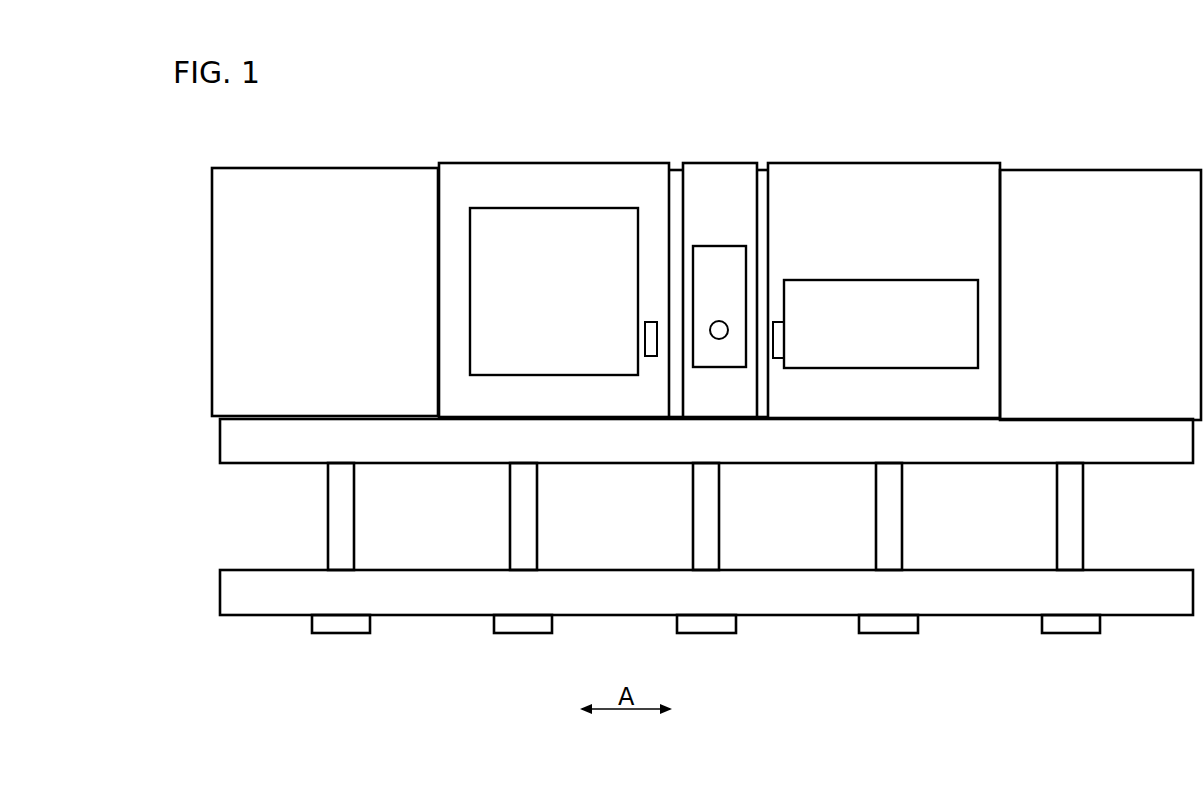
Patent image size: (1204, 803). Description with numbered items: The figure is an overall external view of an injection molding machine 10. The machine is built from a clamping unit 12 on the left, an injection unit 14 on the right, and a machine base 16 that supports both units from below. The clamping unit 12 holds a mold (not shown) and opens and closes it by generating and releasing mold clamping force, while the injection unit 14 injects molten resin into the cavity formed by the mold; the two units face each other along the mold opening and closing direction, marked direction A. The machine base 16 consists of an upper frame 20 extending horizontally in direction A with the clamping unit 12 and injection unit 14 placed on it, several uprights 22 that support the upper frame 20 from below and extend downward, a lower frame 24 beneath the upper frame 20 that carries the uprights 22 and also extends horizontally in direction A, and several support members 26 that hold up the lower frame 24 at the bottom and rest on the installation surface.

The injection molding machine 10 is at (634, 111).
The clamping unit 12 is at (375, 168).
The injection unit 14 is at (1053, 170).
The machine base 16 is at (228, 516).
The upper frame 20 is at (238, 440).
The uprights 22 is at (522, 547).
The lower frame 24 is at (238, 592).
The support members 26 is at (507, 623).